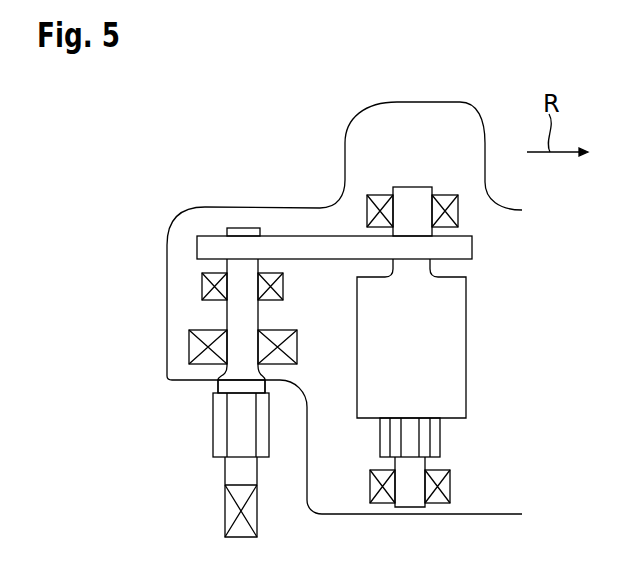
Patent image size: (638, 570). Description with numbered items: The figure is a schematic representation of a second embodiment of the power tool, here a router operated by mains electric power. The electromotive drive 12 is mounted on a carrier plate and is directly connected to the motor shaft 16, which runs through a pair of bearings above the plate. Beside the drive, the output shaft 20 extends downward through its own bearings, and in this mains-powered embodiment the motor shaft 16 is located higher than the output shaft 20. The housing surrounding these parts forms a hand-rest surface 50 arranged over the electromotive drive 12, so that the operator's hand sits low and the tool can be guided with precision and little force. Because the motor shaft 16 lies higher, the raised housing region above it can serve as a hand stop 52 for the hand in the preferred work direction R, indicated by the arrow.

The electromotive drive 12 is at (422, 347).
The motor shaft 16 is at (415, 212).
The output shaft 20 is at (240, 318).
The hand-rest surface 50 is at (266, 207).
The hand stop 52 is at (345, 156).